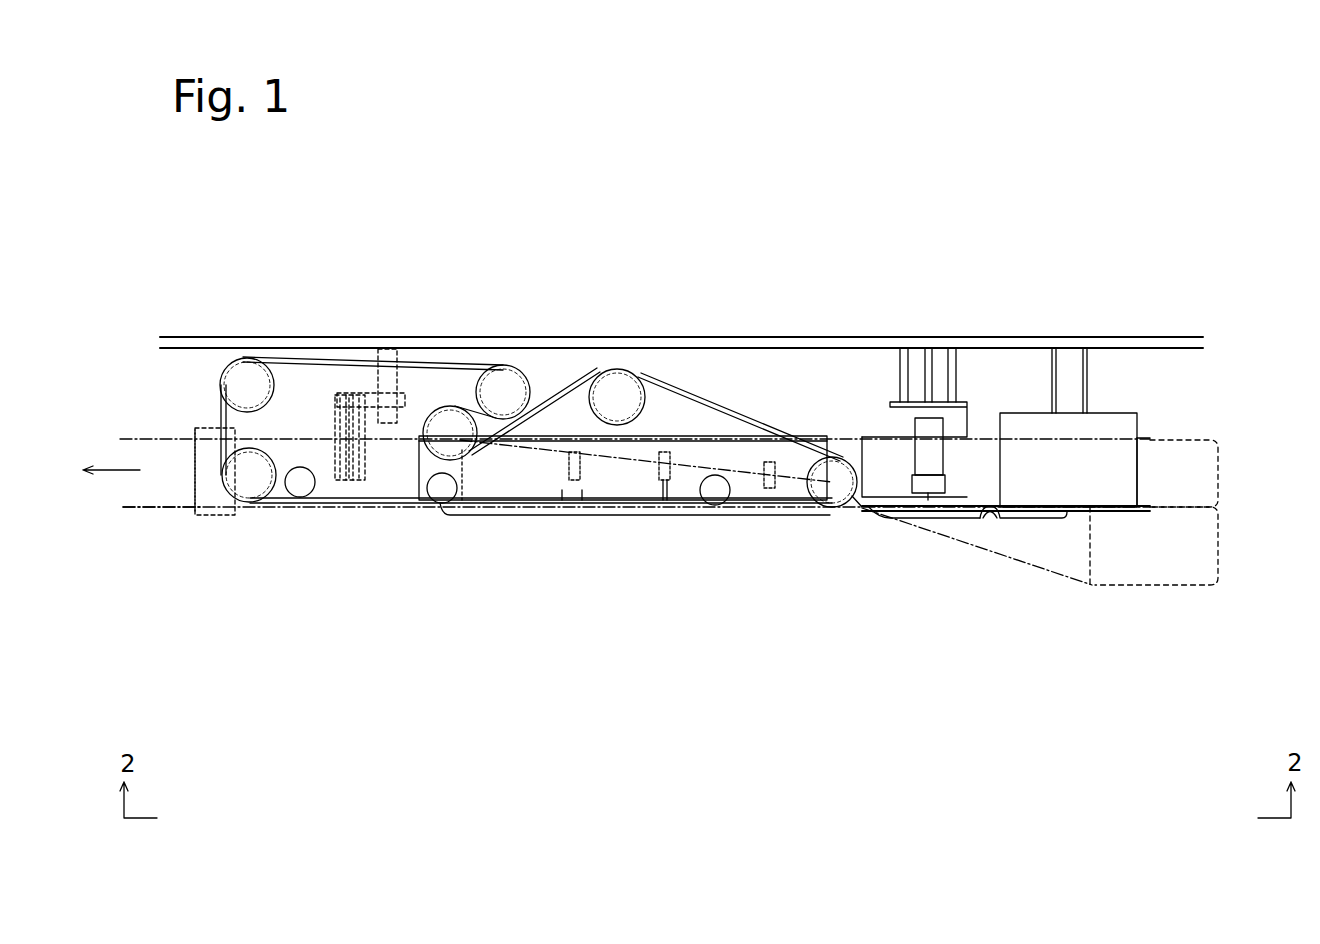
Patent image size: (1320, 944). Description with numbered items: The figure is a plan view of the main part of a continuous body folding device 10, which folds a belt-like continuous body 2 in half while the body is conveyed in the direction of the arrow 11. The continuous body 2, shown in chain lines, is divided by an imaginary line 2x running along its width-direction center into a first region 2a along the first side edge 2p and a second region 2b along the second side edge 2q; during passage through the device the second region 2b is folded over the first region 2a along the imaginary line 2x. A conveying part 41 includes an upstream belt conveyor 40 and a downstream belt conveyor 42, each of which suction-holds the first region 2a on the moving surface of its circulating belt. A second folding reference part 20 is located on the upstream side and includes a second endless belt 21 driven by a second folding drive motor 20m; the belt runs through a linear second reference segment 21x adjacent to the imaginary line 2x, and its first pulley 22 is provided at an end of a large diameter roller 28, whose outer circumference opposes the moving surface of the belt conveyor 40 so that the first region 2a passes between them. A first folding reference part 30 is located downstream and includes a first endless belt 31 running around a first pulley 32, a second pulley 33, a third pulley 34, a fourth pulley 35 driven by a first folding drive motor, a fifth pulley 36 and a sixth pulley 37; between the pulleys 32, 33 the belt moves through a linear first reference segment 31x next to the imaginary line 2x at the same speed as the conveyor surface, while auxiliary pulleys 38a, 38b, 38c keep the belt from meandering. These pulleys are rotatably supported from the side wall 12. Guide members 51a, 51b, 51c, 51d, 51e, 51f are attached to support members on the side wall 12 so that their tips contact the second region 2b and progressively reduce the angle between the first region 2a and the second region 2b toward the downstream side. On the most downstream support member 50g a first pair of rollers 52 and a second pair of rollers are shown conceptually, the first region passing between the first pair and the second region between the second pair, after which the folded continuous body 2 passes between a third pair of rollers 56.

The folding device 10 is at (1204, 198).
The arrow 11 is at (120, 470).
The side wall 12 is at (731, 337).
The continuous body 2 is at (1290, 445).
The first region 2a is at (1218, 444).
The second region 2b is at (1218, 509).
The first side edge 2p is at (1165, 440).
The second side edge 2q is at (630, 510).
The imaginary line 2x is at (160, 512).
The second folding reference part 20 is at (983, 274).
The second folding drive motor 20m is at (940, 428).
The second endless belt 21 is at (943, 507).
The second reference segment 21x is at (985, 522).
The first pulley 22 is at (1105, 512).
The large diameter roller 28 is at (1037, 431).
The first folding reference part 30 is at (481, 301).
The first endless belt 31 is at (747, 437).
The first reference segment 31x is at (660, 520).
The first pulley 32 is at (836, 512).
The second pulley 33 is at (234, 450).
The third pulley 34 is at (246, 357).
The fourth pulley 35 is at (503, 365).
The fifth pulley 36 is at (450, 406).
The sixth pulley 37 is at (617, 369).
The auxiliary pulley 38a is at (715, 505).
The auxiliary pulley 38b is at (440, 502).
The auxiliary pulley 38c is at (298, 498).
The belt conveyor 40 is at (872, 438).
The conveying part 41 is at (912, 254).
The belt conveyor 42 is at (815, 437).
The support member 50g is at (378, 360).
The second guide member 51a is at (995, 512).
The second guide member 51b is at (860, 507).
The first guide member 51c is at (770, 510).
The first guide member 51d is at (665, 520).
The first guide member 51e is at (580, 520).
The first guide member 51f is at (470, 520).
The roller of first pair 52 is at (345, 490).
The roller of third pair 56 is at (205, 520).